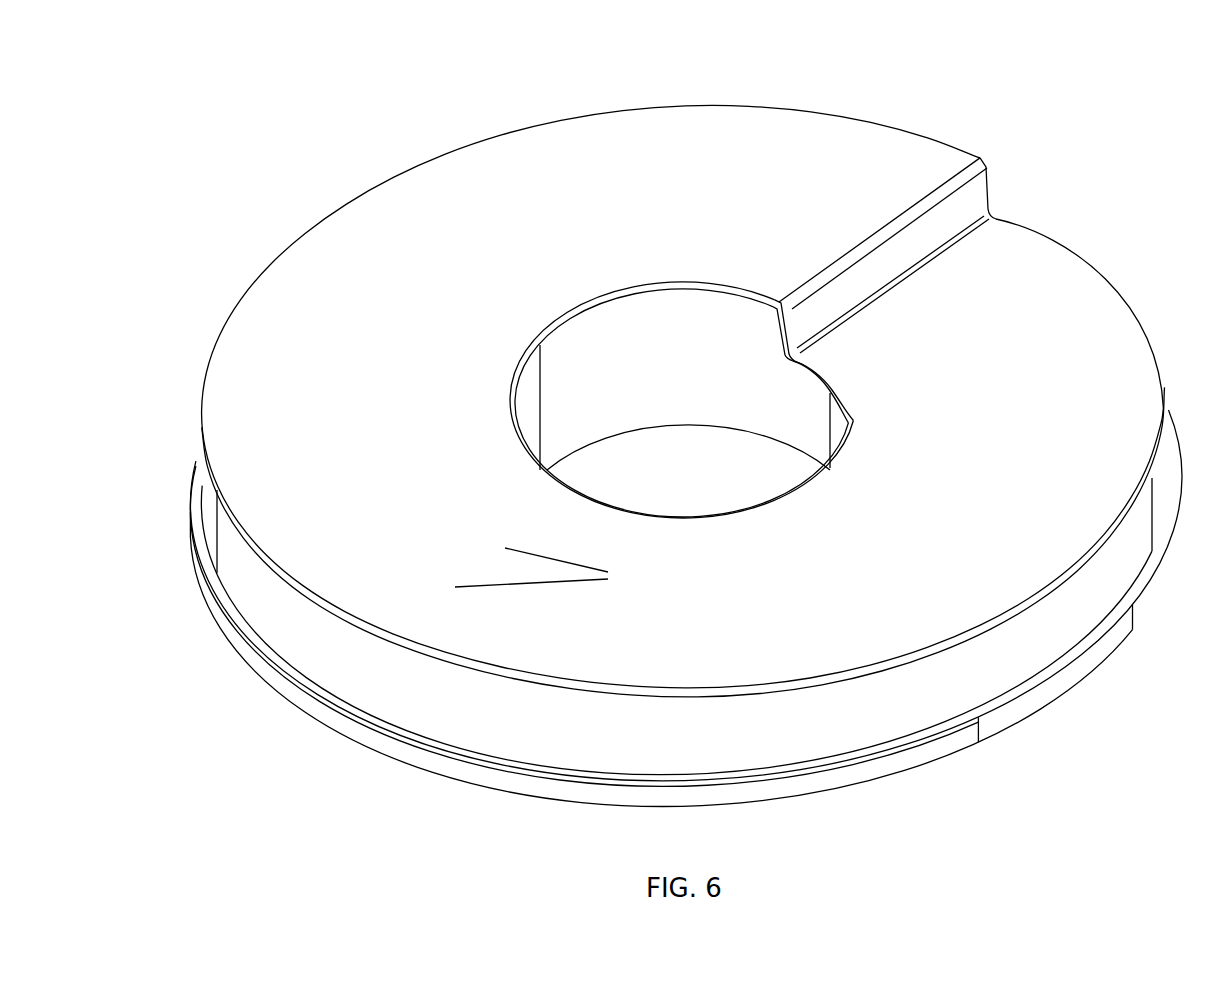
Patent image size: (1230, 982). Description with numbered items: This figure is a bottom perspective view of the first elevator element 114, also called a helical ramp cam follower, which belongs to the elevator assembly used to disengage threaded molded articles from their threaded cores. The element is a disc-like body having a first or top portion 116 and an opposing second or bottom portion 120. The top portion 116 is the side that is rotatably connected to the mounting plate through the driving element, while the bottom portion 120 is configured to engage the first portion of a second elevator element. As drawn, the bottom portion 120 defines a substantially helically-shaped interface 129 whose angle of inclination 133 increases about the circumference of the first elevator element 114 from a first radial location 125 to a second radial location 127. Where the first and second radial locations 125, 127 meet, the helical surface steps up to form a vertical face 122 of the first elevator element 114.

The first elevator element 114 is at (863, 71).
The first or top portion 116 is at (976, 781).
The second or bottom portion 120 is at (1101, 317).
The vertical face 122 is at (976, 184).
The first radial location 125 is at (1009, 205).
The second radial location 127 is at (944, 153).
The substantially helically-shaped interface 129 is at (342, 228).
The angle of inclination 133 is at (563, 612).